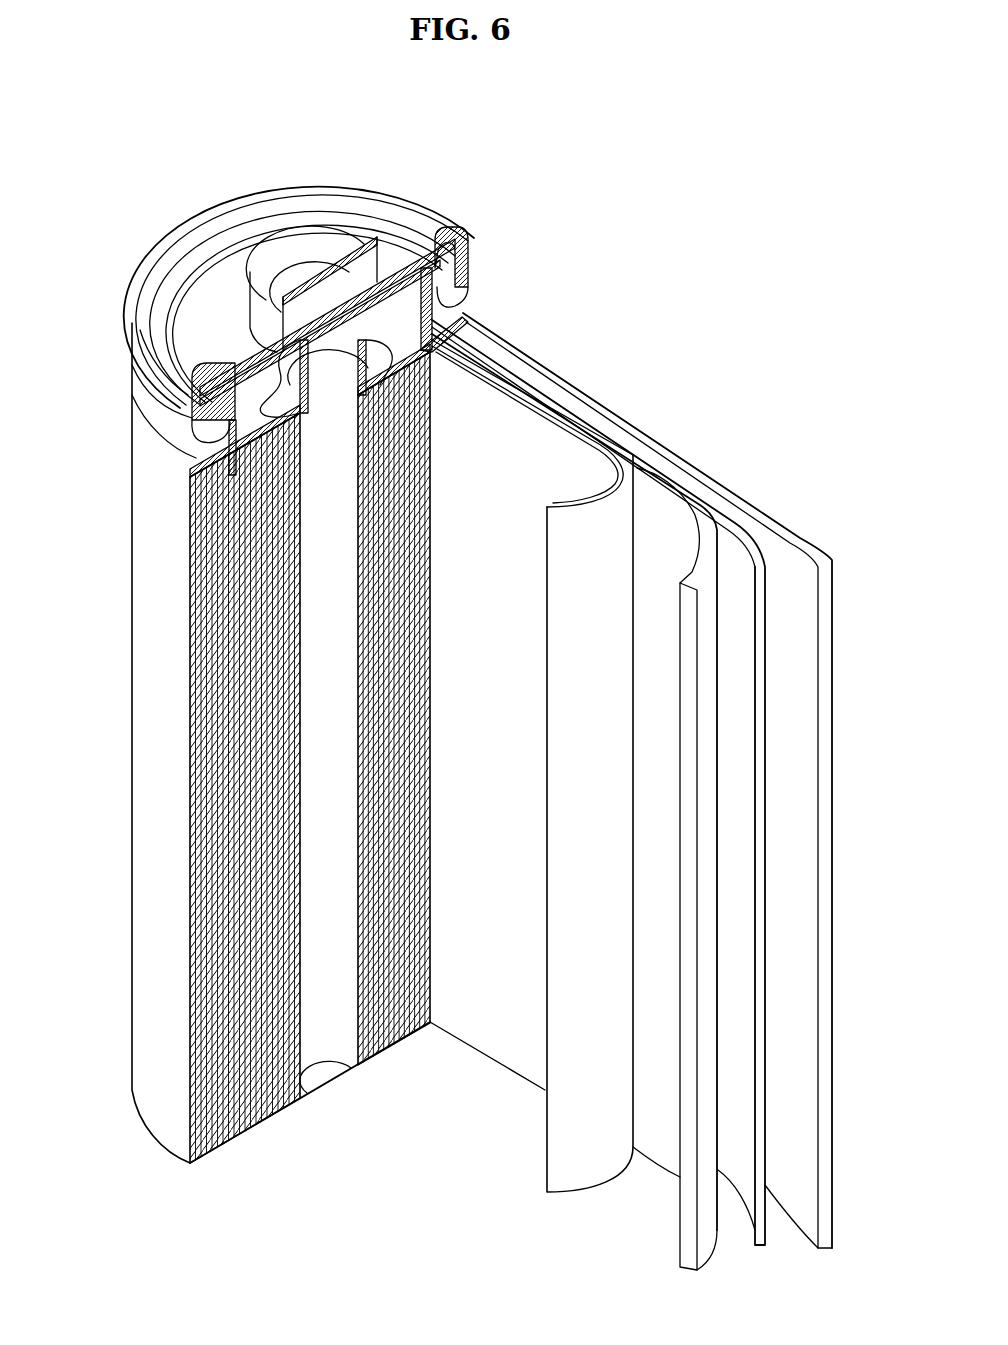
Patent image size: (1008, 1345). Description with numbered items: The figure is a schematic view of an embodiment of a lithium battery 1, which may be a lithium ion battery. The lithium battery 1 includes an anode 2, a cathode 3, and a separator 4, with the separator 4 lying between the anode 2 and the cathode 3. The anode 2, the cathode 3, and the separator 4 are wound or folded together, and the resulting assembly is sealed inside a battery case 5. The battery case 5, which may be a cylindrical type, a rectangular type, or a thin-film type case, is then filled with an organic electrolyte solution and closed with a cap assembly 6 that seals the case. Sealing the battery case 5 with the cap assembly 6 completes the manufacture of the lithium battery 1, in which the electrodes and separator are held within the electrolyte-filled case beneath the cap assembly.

The lithium battery 1 is at (655, 224).
The anode 2 is at (800, 522).
The cathode 3 is at (706, 515).
The separator 4 is at (592, 505).
The battery case 5 is at (140, 738).
The cap assembly 6 is at (290, 250).